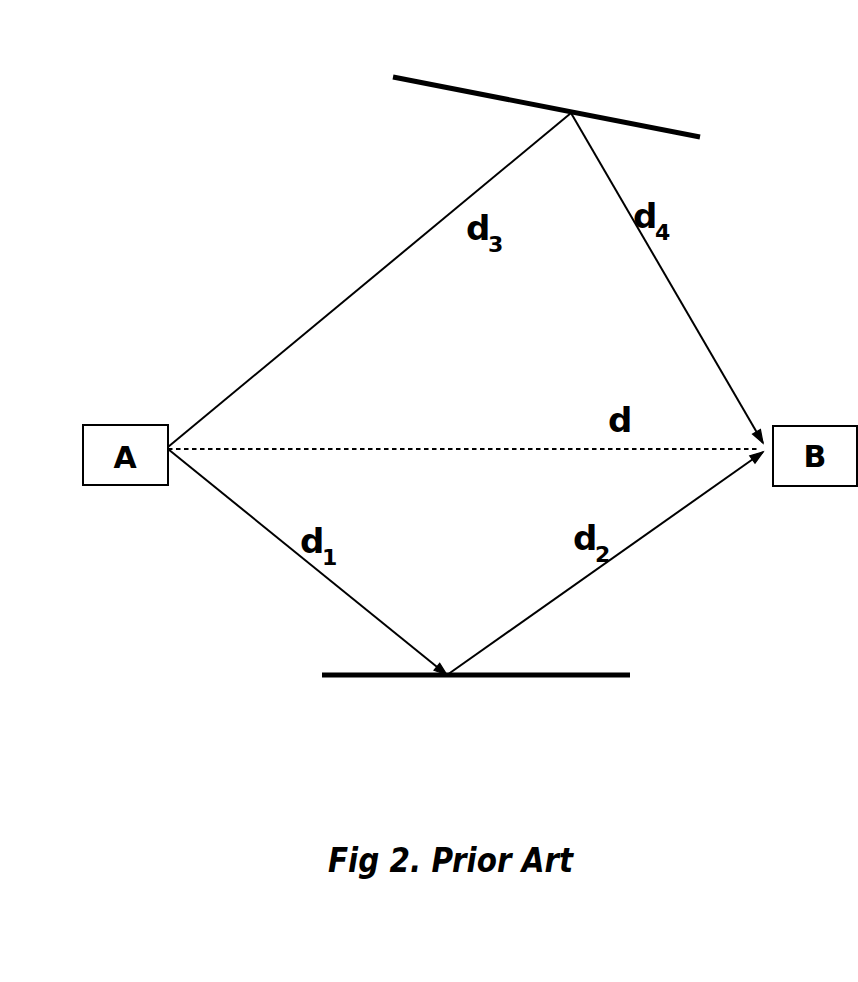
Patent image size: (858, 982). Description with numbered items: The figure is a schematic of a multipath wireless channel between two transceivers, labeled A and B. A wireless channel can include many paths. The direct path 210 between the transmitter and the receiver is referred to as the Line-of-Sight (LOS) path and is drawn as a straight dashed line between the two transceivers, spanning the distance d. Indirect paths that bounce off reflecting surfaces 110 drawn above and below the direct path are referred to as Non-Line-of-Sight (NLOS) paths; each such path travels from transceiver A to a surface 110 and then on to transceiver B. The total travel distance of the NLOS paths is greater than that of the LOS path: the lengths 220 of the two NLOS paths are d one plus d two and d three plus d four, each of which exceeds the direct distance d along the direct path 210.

The reflecting surface 110 is at (688, 133).
The direct path 210 is at (460, 449).
The lengths of NLOS paths 220 is at (635, 249).